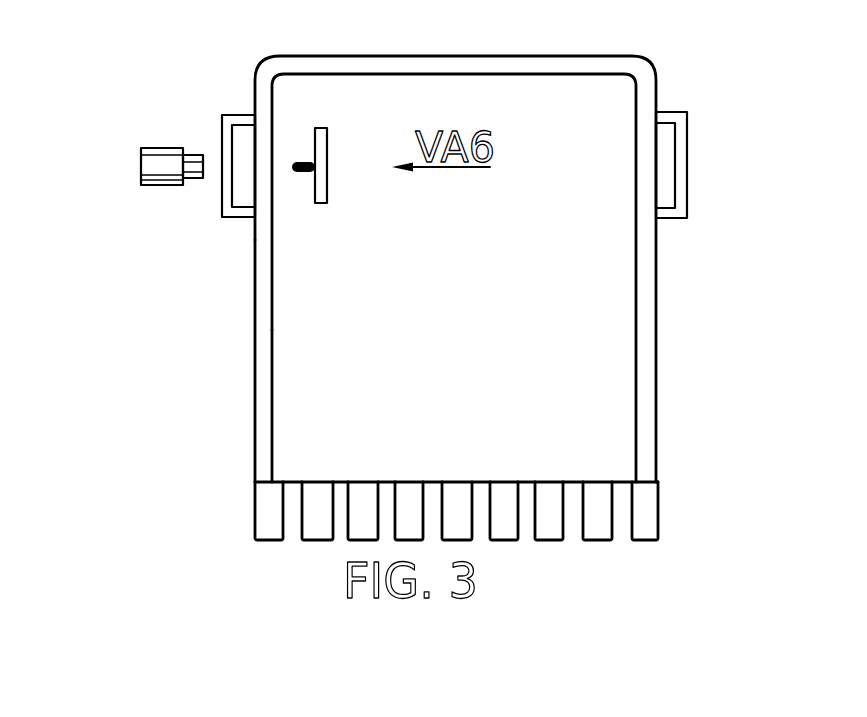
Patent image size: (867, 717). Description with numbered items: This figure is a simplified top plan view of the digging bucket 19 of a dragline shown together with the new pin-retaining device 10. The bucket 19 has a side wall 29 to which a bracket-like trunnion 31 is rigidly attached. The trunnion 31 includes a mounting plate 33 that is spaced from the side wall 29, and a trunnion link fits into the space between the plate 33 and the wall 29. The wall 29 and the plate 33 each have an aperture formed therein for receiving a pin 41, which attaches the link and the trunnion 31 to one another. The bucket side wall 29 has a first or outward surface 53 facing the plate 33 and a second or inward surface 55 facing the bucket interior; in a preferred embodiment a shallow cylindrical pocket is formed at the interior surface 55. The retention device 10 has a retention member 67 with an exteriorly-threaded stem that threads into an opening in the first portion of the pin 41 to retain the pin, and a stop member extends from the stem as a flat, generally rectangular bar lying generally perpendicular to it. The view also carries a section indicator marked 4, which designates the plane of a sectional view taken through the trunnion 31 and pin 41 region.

The pin-retaining device 10 is at (193, 121).
The digging bucket 19 is at (658, 298).
The side wall 29 is at (265, 280).
The trunnion 31 is at (227, 220).
The mounting plate 33 is at (223, 193).
The pin 41 is at (141, 164).
The first or outward surface 53 is at (253, 303).
The second or inward surface 55 is at (273, 360).
The retention member 67 is at (327, 137).
The section line 4 is at (103, 167).